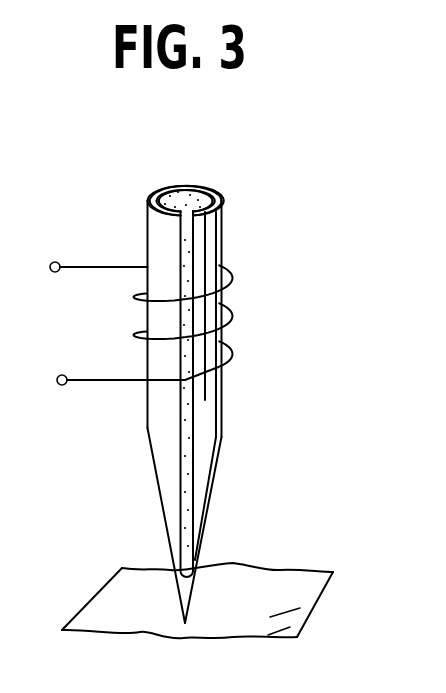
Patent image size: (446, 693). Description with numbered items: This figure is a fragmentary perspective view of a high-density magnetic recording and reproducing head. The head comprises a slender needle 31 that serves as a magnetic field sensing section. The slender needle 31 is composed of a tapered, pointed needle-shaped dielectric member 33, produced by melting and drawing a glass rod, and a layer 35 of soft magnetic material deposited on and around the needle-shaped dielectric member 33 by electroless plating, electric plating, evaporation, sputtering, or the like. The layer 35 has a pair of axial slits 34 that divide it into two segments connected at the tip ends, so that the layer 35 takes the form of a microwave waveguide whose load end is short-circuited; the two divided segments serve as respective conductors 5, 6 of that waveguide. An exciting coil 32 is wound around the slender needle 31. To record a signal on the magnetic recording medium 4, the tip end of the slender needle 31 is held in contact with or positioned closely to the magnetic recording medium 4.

The magnetic recording medium 4 is at (308, 605).
The conductor 5 is at (165, 463).
The conductor 6 is at (205, 478).
The slender needle 31 is at (157, 268).
The exciting coil 32 is at (230, 318).
The needle-shaped dielectric member 33 is at (174, 198).
The axial slits 34 is at (186, 232).
The layer of soft magnetic material 35 is at (168, 283).